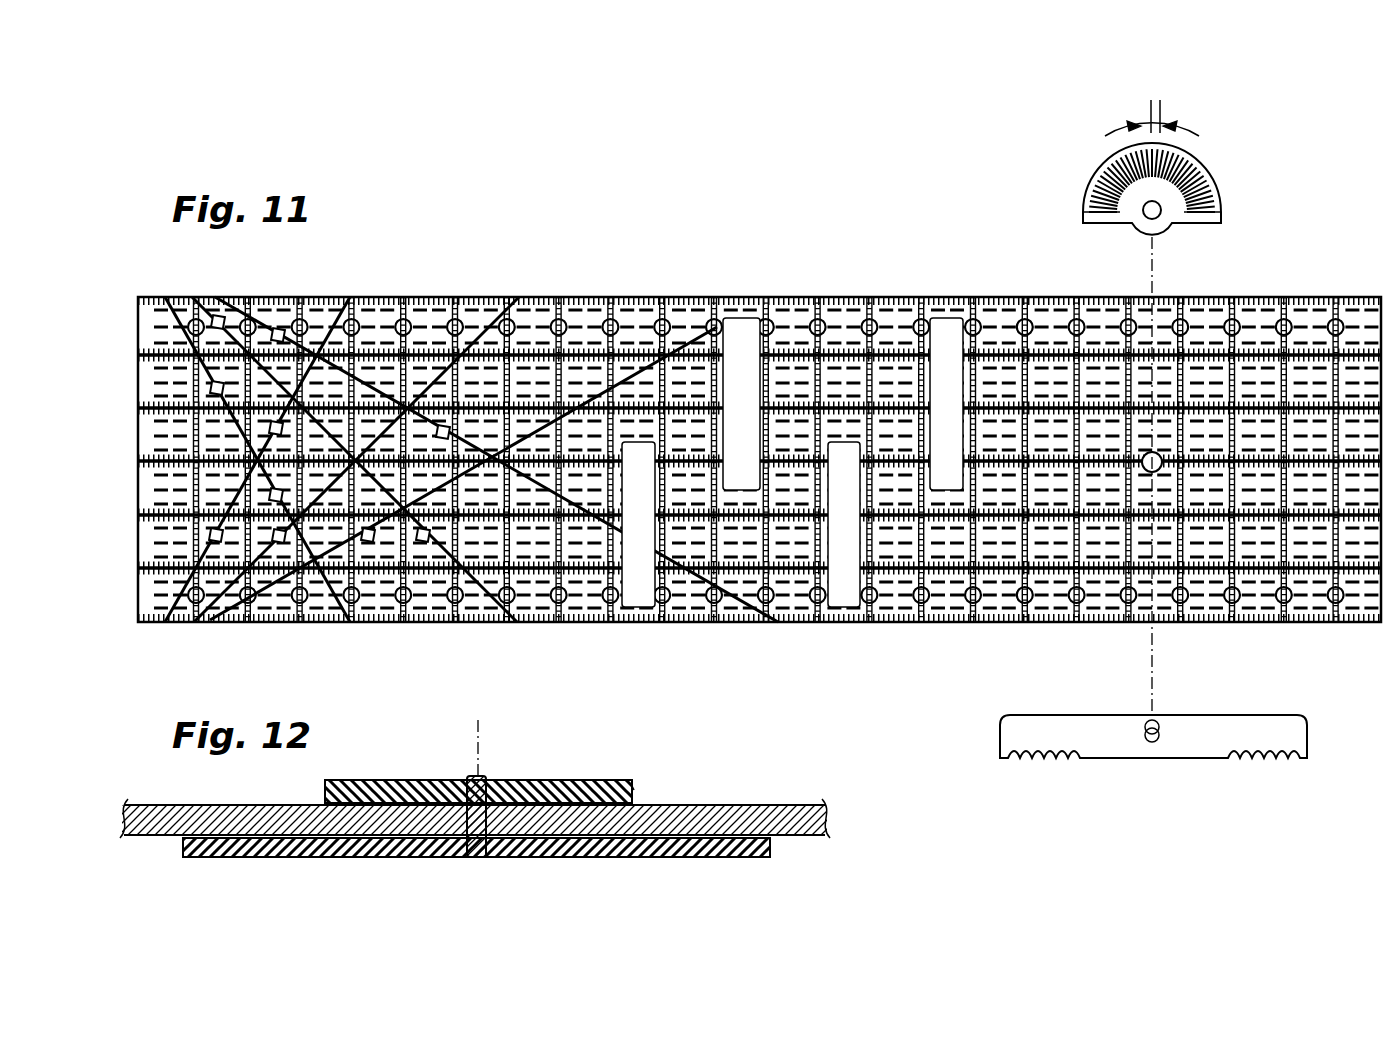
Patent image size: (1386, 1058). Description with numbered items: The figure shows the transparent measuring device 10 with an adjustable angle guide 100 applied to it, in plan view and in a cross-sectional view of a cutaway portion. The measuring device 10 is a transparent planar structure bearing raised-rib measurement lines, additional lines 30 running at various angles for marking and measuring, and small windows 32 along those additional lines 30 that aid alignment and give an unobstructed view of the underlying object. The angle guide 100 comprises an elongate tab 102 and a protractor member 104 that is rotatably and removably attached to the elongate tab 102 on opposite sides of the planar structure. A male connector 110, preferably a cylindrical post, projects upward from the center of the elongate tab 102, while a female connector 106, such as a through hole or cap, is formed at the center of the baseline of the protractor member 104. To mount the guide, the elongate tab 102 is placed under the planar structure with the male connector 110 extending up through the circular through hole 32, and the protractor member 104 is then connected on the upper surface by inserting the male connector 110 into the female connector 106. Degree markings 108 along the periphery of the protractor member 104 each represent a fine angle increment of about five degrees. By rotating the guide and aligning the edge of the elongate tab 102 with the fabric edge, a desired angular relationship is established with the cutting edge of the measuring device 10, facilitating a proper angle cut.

In FIG. 12, the transparent measuring device 10 is at (776, 805).
In FIG. 11, the additional lines 30 is at (457, 357).
In FIG. 11, the through hole 32 is at (443, 425).
In FIG. 12, the through hole 32 is at (484, 800).
In FIG. 11, the adjustable angle guide 100 is at (1126, 441).
In FIG. 12, the adjustable angle guide 100 is at (482, 806).
In FIG. 11, the elongate tab 102 is at (1003, 738).
In FIG. 12, the elongate tab 102 is at (700, 851).
In FIG. 11, the protractor member 104 is at (1197, 225).
In FIG. 12, the protractor member 104 is at (583, 780).
In FIG. 11, the female connector 106 is at (1147, 224).
In FIG. 12, the female connector 106 is at (470, 777).
In FIG. 11, the degree markings 108 is at (1203, 162).
In FIG. 12, the degree markings 108 is at (634, 788).
In FIG. 11, the male connector 110 is at (1160, 742).